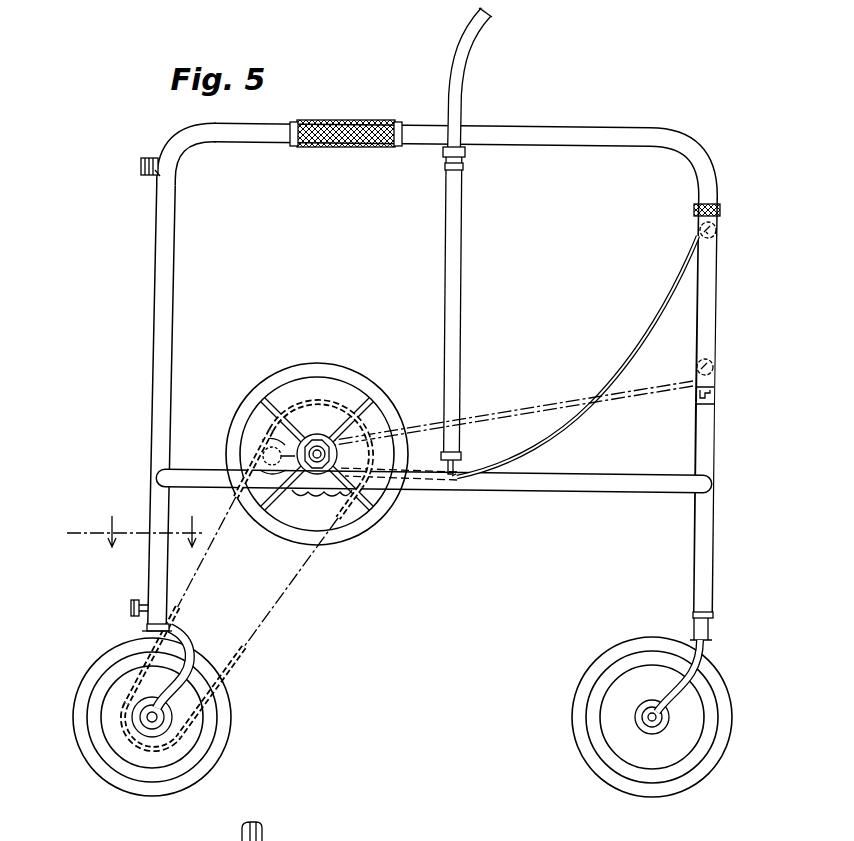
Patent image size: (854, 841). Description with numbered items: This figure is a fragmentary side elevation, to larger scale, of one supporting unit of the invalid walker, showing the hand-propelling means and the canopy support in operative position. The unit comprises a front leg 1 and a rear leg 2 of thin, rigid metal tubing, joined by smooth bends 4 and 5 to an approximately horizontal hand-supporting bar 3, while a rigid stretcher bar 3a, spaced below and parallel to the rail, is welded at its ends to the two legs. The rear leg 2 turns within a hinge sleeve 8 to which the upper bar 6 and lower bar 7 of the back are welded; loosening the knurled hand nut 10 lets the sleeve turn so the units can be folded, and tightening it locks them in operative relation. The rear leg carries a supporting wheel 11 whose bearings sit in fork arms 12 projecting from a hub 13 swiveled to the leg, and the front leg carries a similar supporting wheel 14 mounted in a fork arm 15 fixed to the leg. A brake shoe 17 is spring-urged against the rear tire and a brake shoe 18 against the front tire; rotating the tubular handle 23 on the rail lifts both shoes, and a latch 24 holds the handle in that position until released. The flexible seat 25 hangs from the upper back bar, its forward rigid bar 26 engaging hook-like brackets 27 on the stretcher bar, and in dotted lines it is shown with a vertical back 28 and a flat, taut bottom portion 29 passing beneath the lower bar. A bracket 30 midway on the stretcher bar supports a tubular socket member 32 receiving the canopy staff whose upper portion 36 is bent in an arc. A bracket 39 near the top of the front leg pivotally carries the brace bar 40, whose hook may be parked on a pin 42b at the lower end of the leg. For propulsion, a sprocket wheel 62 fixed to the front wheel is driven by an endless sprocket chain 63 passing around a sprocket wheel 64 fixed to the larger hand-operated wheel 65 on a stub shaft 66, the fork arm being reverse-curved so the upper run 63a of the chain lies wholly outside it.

The front leg 1 is at (158, 302).
The rear leg 2 is at (711, 526).
The hand-supporting bar 3 is at (532, 146).
The stretcher bar 3a is at (556, 492).
The bend 4 is at (172, 150).
The bend 5 is at (716, 166).
The upper bar of the back 6 is at (717, 231).
The lower bar of the back 7 is at (697, 369).
The hinge sleeve 8 is at (713, 292).
The knurled hand nut 10 is at (720, 213).
The supporting wheel 11 is at (716, 785).
The fork arms 12 is at (680, 688).
The hub 13 is at (712, 608).
The supporting wheel 14 is at (250, 722).
The fork arm 15 is at (191, 644).
The brake shoe 17 is at (724, 612).
The brake shoe 18 is at (146, 632).
The rotary handle 23 is at (343, 120).
The latch 24 is at (397, 120).
The seat 25 is at (670, 290).
The rigid bar 26 is at (219, 552).
The brackets 27 is at (262, 420).
The back portion of the seat 28 is at (717, 350).
The bottom portion of the seat 29 is at (630, 412).
The bracket 30 is at (458, 468).
The socket member 32 is at (458, 322).
The upper portion of the staff 36 is at (478, 57).
The bracket 39 is at (156, 180).
The brace bar 40 is at (143, 167).
The pin 42b is at (130, 609).
The sprocket wheel 62 is at (132, 740).
The sprocket chain 63 is at (237, 668).
The upper run of the sprocket chain 63a is at (188, 606).
The sprocket wheel 64 is at (318, 410).
The hand-operated wheel 65 is at (360, 390).
The stub shaft 66 is at (380, 417).